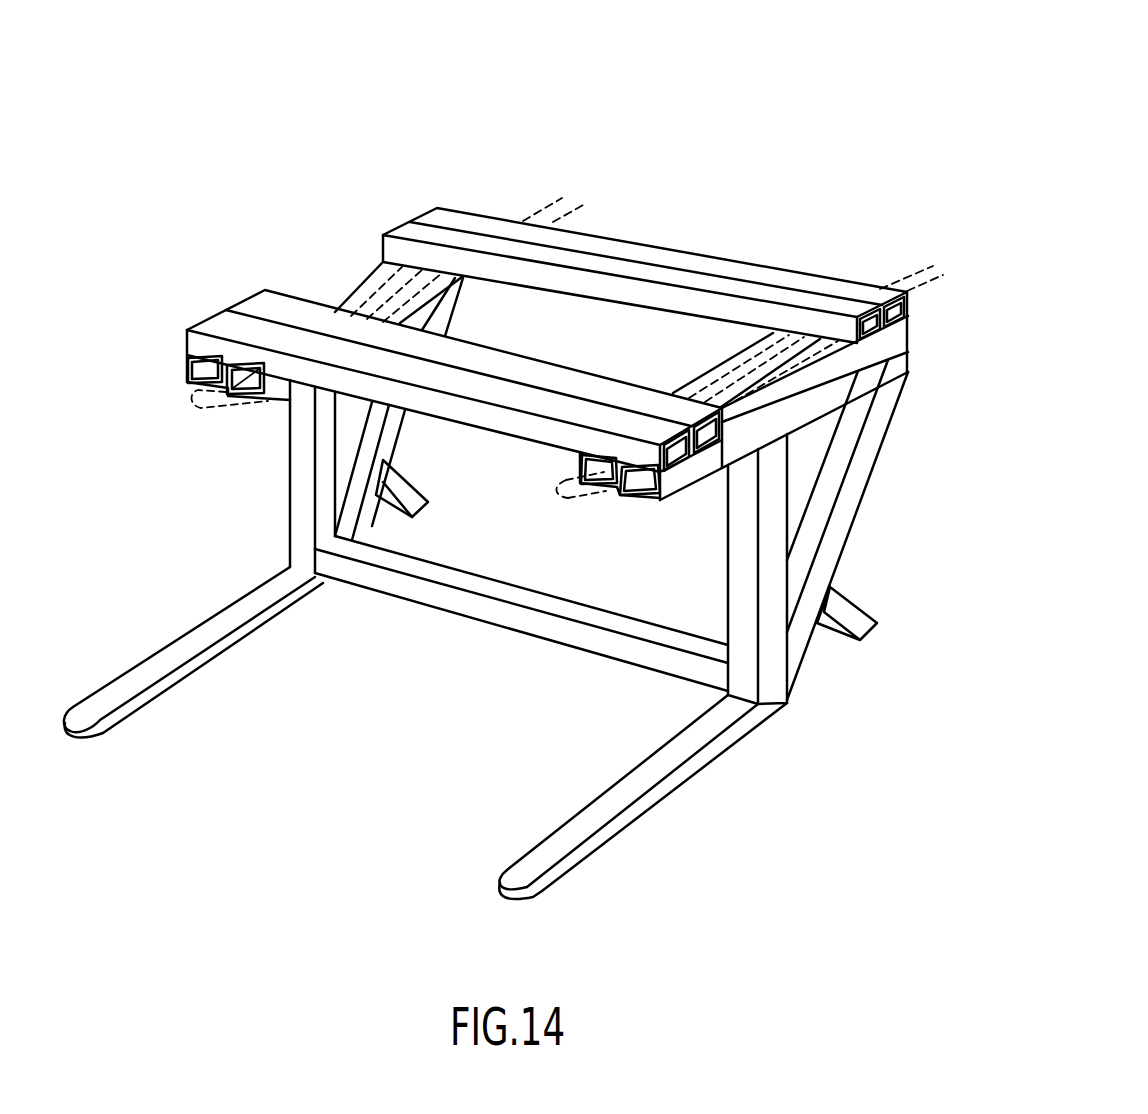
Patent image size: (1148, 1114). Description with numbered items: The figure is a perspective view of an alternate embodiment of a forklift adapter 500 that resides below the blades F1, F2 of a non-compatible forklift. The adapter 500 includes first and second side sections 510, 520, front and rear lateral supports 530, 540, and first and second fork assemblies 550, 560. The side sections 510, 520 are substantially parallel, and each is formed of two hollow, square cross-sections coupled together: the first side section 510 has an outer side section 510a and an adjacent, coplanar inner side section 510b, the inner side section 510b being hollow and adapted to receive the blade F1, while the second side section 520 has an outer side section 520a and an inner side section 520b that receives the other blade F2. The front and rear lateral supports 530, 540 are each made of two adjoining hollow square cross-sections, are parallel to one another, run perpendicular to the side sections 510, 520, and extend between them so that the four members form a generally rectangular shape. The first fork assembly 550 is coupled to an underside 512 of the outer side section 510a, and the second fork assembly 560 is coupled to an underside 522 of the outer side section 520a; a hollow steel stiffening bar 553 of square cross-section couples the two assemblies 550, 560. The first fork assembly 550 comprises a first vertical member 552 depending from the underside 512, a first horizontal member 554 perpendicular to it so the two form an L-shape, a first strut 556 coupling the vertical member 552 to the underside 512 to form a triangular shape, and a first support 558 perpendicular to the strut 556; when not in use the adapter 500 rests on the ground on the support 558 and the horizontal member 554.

The forklift adapter 500 is at (762, 122).
The first side section 510 is at (330, 250).
The outer side section 510a is at (188, 360).
The inner side section 510b is at (270, 396).
The underside 512 is at (404, 323).
The second side section 520 is at (690, 448).
The outer side section 520a is at (677, 477).
The inner side section 520b is at (580, 470).
The underside 522 is at (797, 413).
The front lateral support 530 is at (232, 326).
The rear lateral support 540 is at (645, 245).
The first fork assembly 550 is at (245, 563).
The first vertical member 552 is at (300, 497).
The stiffening bar 553 is at (490, 613).
The first horizontal member 554 is at (143, 677).
The first strut 556 is at (365, 526).
The first support 558 is at (378, 502).
The second fork assembly 560 is at (710, 790).
The blade F1 is at (197, 392).
The blade F2 is at (593, 500).